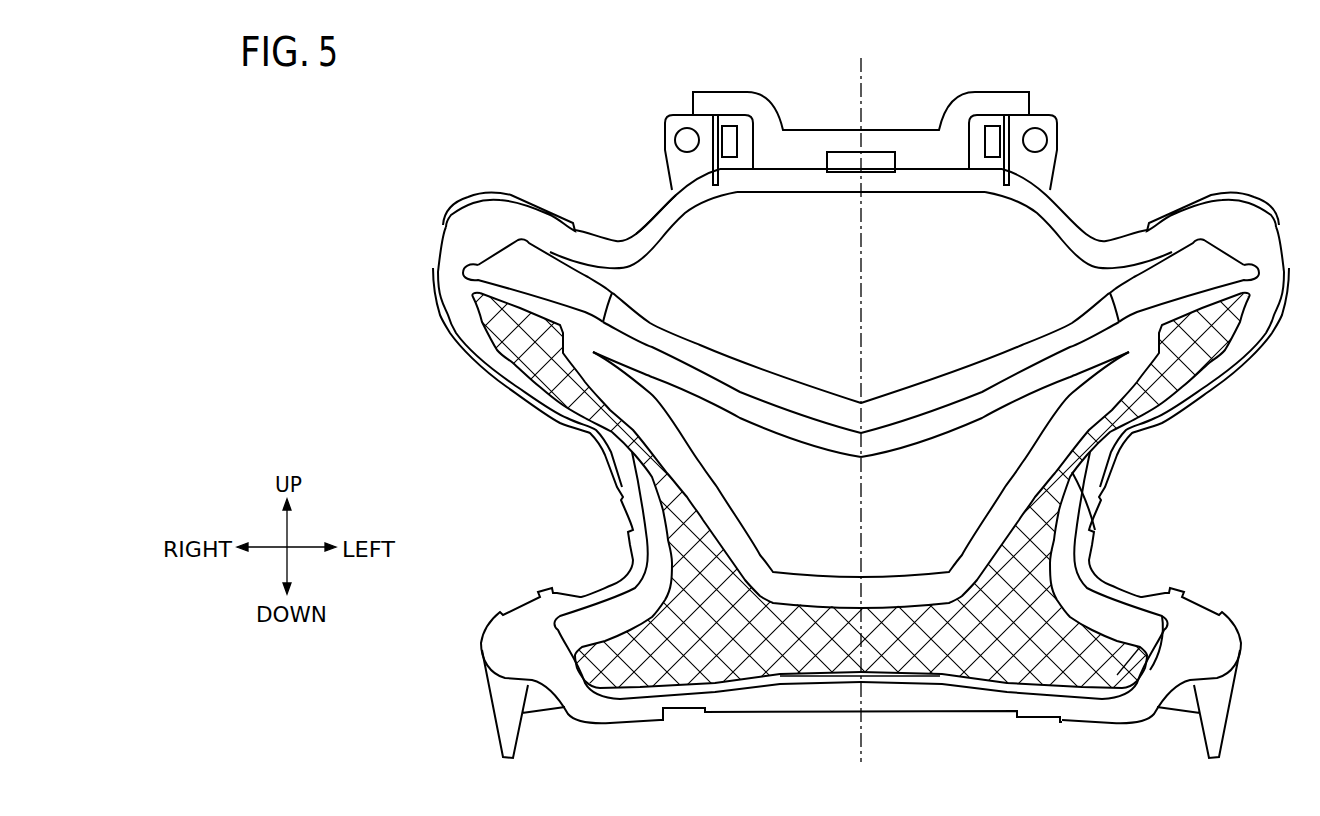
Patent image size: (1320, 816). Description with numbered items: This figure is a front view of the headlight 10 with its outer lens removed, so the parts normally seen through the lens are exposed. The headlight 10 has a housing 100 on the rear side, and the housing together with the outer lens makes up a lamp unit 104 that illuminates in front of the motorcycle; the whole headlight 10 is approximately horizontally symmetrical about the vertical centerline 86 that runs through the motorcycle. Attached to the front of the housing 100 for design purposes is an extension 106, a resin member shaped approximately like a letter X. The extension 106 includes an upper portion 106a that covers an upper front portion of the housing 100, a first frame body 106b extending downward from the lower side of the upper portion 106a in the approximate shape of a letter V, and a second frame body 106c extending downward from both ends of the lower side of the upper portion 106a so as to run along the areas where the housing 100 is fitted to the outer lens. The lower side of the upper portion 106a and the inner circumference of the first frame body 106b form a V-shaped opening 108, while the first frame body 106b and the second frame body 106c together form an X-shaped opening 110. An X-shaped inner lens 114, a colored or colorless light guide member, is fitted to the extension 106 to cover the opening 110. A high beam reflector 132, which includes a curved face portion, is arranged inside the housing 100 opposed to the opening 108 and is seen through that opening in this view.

The headlight 10 is at (561, 99).
The centerline 86 is at (862, 88).
The housing 100 is at (803, 147).
The lamp unit 104 is at (1232, 182).
The extension 106 is at (1053, 215).
The upper portion 106a is at (662, 258).
The first frame body 106b is at (1068, 470).
The second frame body 106c is at (1150, 630).
The opening 108 is at (723, 468).
The opening 110 is at (1103, 683).
The inner lens 114 is at (804, 663).
The high beam reflector 132 is at (1045, 405).